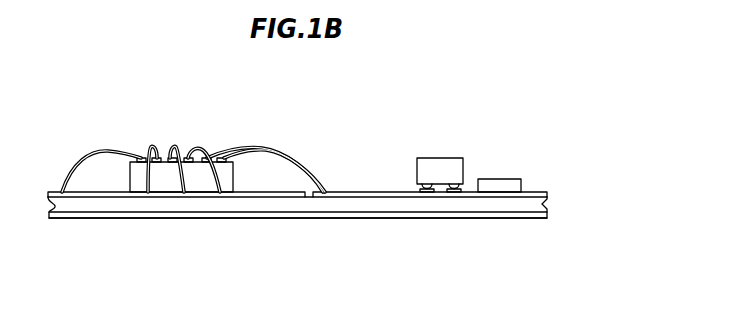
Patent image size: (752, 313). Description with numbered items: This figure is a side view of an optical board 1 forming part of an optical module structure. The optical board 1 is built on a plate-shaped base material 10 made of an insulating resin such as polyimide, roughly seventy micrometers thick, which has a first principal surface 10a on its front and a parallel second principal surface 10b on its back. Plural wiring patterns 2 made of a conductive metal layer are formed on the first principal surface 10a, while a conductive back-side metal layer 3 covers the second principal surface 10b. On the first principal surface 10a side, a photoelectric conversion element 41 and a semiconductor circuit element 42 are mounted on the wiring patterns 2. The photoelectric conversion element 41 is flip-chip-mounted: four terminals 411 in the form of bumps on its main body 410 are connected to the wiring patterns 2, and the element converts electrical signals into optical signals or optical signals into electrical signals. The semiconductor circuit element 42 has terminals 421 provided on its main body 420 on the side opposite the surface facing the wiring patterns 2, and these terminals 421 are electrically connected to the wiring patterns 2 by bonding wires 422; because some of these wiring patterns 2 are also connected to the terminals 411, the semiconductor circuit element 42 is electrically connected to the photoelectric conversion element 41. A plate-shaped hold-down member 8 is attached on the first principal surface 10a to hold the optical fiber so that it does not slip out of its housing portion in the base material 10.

The optical board 1 is at (82, 235).
The wiring patterns 2 is at (375, 192).
The back-side metal layer 3 is at (333, 215).
The hold-down member 8 is at (490, 183).
The base material 10 is at (547, 205).
The first principal surface 10a is at (534, 192).
The second principal surface 10b is at (533, 218).
The photoelectric conversion element 41 is at (413, 145).
The main body 410 is at (442, 167).
The terminals 411 is at (455, 192).
The semiconductor circuit element 42 is at (158, 135).
The main body 420 is at (173, 185).
The terminals 421 is at (218, 150).
The bonding wires 422 is at (275, 150).